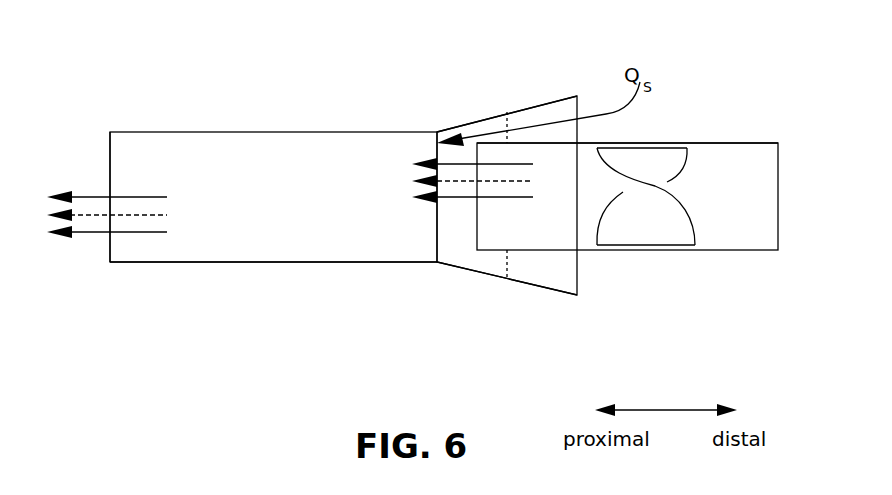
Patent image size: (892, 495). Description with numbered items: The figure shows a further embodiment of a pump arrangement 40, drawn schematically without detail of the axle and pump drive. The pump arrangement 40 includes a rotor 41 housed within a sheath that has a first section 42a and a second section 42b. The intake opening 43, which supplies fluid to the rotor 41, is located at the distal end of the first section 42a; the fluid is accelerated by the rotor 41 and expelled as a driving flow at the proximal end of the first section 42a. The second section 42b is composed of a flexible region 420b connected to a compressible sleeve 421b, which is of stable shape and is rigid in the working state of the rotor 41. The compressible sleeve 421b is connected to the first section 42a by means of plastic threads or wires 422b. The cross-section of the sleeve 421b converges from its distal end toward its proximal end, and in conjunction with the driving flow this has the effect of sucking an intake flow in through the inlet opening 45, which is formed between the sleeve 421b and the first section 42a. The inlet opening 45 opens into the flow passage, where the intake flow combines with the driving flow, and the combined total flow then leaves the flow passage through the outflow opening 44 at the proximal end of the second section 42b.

The pump arrangement 40 is at (292, 95).
The rotor 41 is at (647, 230).
The first section of the sheath 42a is at (722, 143).
The second section of the sheath 42b is at (415, 98).
The intake opening 43 is at (778, 175).
The outflow opening 44 is at (110, 152).
The inlet opening 45 is at (543, 113).
The flexible region 420b is at (360, 263).
The compressible sleeve 421b is at (482, 277).
The plastic threads or wires 422b is at (507, 264).